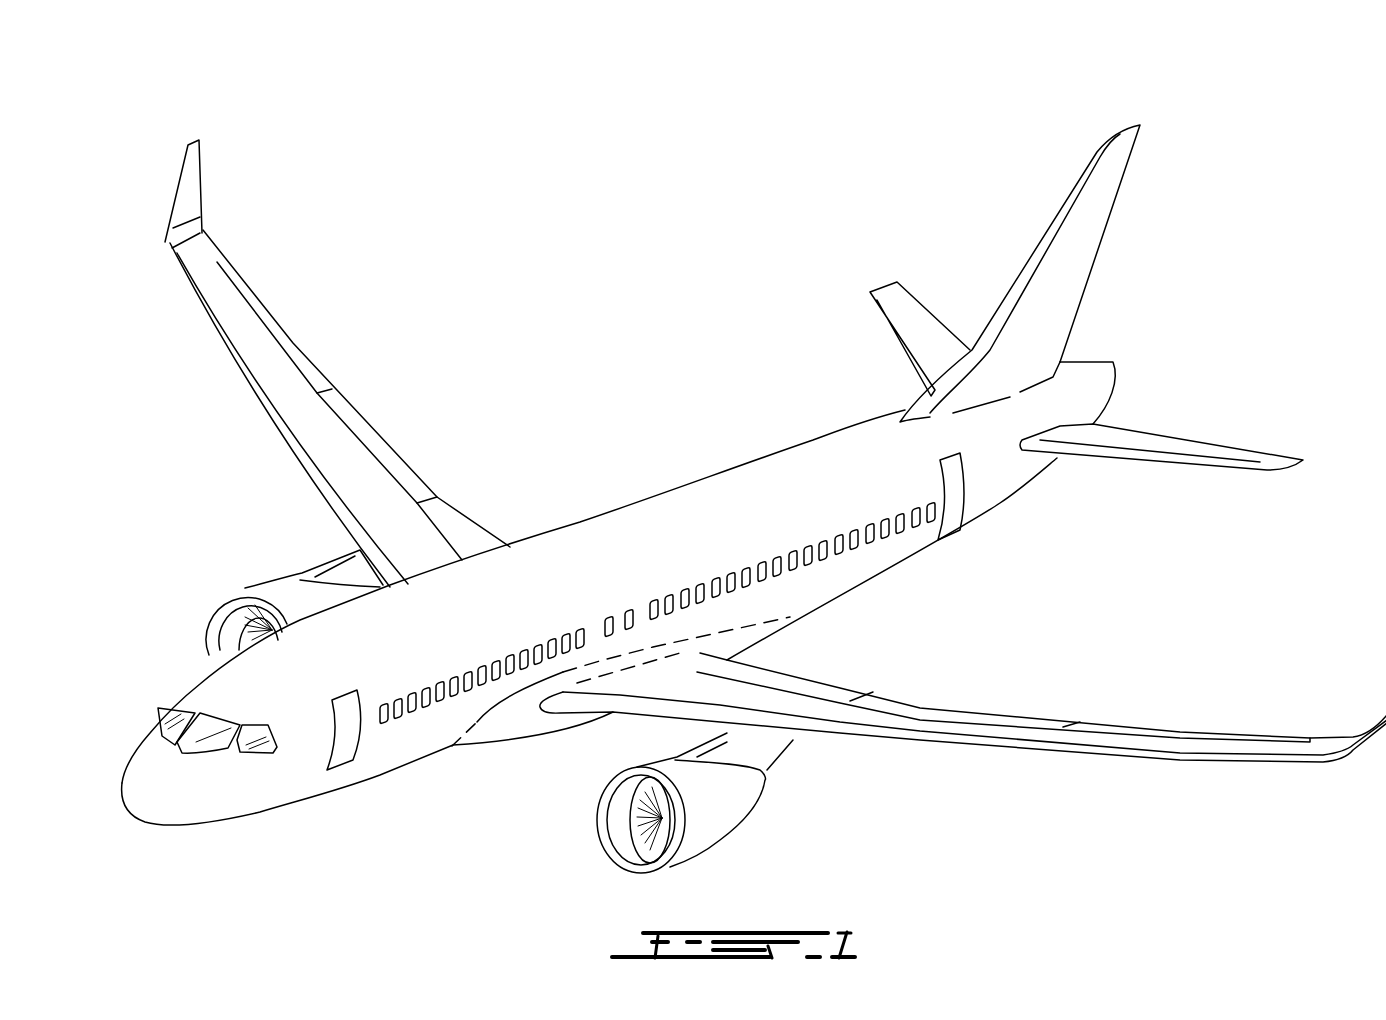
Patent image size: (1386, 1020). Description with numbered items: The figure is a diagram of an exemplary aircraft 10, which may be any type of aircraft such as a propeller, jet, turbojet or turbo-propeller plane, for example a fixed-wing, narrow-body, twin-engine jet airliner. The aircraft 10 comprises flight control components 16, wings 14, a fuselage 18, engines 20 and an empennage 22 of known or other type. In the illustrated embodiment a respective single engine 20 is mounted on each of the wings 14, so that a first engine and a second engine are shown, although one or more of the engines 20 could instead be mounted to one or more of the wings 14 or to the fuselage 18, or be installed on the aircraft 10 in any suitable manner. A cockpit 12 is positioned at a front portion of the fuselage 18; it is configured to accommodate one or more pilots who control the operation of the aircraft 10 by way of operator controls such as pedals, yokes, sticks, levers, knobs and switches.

The aircraft 10 is at (721, 471).
The cockpit 12 is at (162, 716).
The wings 14 is at (721, 517).
The flight control components 16 is at (293, 343).
The fuselage 18 is at (692, 507).
The engines 20 is at (214, 611).
The empennage 22 is at (946, 205).